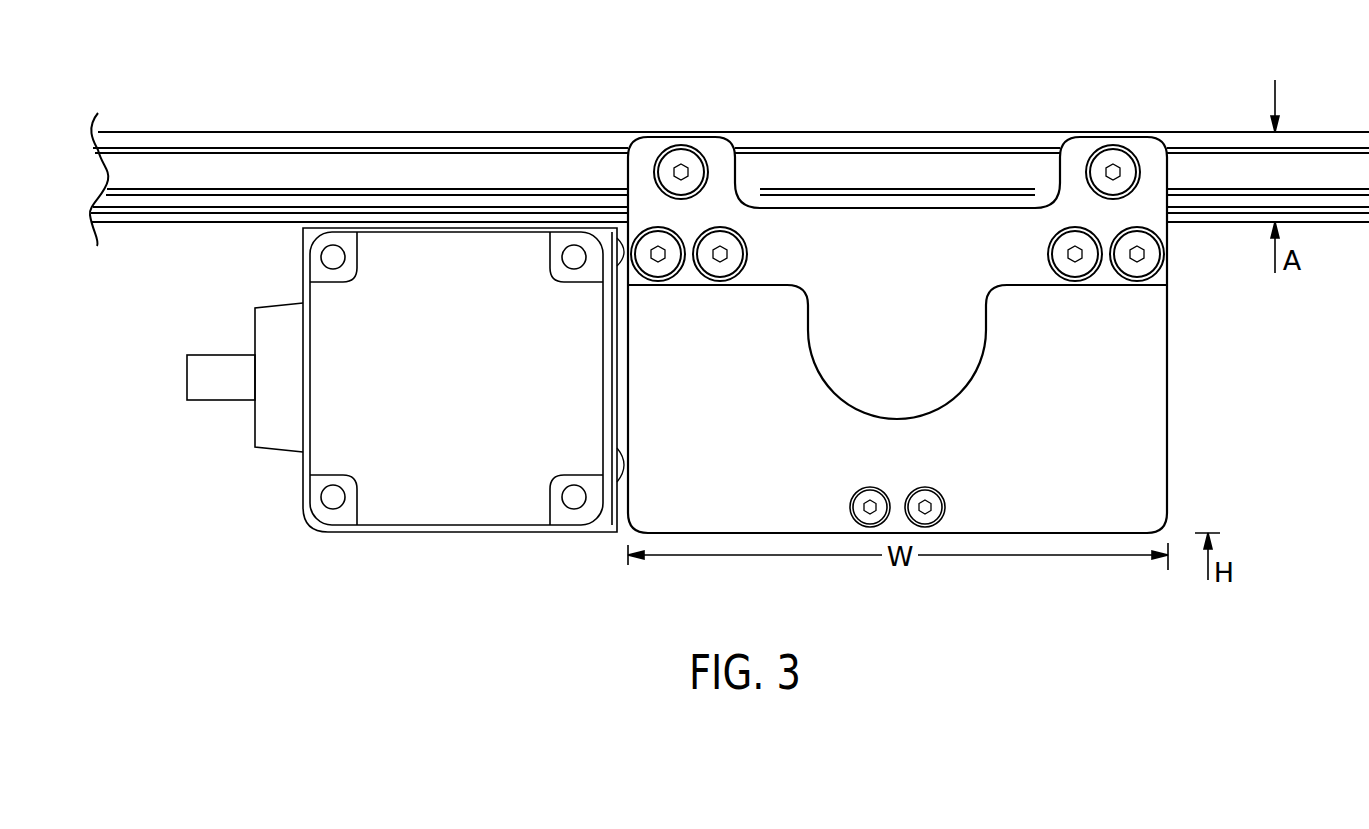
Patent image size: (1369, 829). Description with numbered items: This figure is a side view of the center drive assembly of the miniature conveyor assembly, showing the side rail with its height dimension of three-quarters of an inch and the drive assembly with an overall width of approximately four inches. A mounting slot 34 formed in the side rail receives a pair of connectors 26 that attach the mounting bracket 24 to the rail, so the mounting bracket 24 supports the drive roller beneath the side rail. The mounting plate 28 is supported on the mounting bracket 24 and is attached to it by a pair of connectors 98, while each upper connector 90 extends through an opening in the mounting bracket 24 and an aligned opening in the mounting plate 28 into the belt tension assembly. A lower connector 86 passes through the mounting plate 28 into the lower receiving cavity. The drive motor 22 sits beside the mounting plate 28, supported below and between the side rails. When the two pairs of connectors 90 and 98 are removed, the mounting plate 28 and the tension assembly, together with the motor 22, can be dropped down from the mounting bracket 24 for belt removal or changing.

The drive motor 22 is at (278, 433).
The mounting bracket 24 is at (960, 368).
The connectors 26 is at (690, 160).
The mounting plate 28 is at (1148, 425).
The mounting slot 34 is at (445, 163).
The lower connector 86 is at (860, 498).
The upper connector 90 is at (665, 268).
The connectors 98 is at (727, 268).